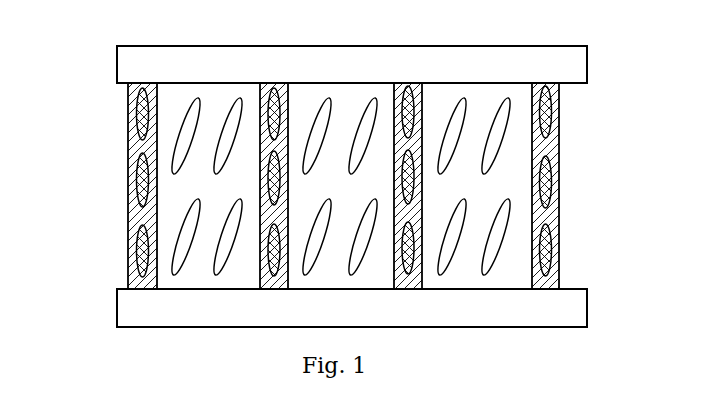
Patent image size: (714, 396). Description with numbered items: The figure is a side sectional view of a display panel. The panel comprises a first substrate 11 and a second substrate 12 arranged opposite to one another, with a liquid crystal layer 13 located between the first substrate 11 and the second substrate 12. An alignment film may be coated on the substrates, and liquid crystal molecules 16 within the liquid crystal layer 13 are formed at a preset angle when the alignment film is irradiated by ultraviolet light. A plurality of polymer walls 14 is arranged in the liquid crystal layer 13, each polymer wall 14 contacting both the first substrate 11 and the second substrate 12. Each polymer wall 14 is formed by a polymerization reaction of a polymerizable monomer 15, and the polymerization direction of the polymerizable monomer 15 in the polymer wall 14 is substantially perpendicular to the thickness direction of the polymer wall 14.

The first substrate 11 is at (117, 72).
The second substrate 12 is at (117, 312).
The liquid crystal layer 13 is at (560, 215).
The polymer wall 14 is at (99, 186).
The polymerizable monomer 15 is at (137, 193).
The liquid crystal molecules 16 is at (503, 138).